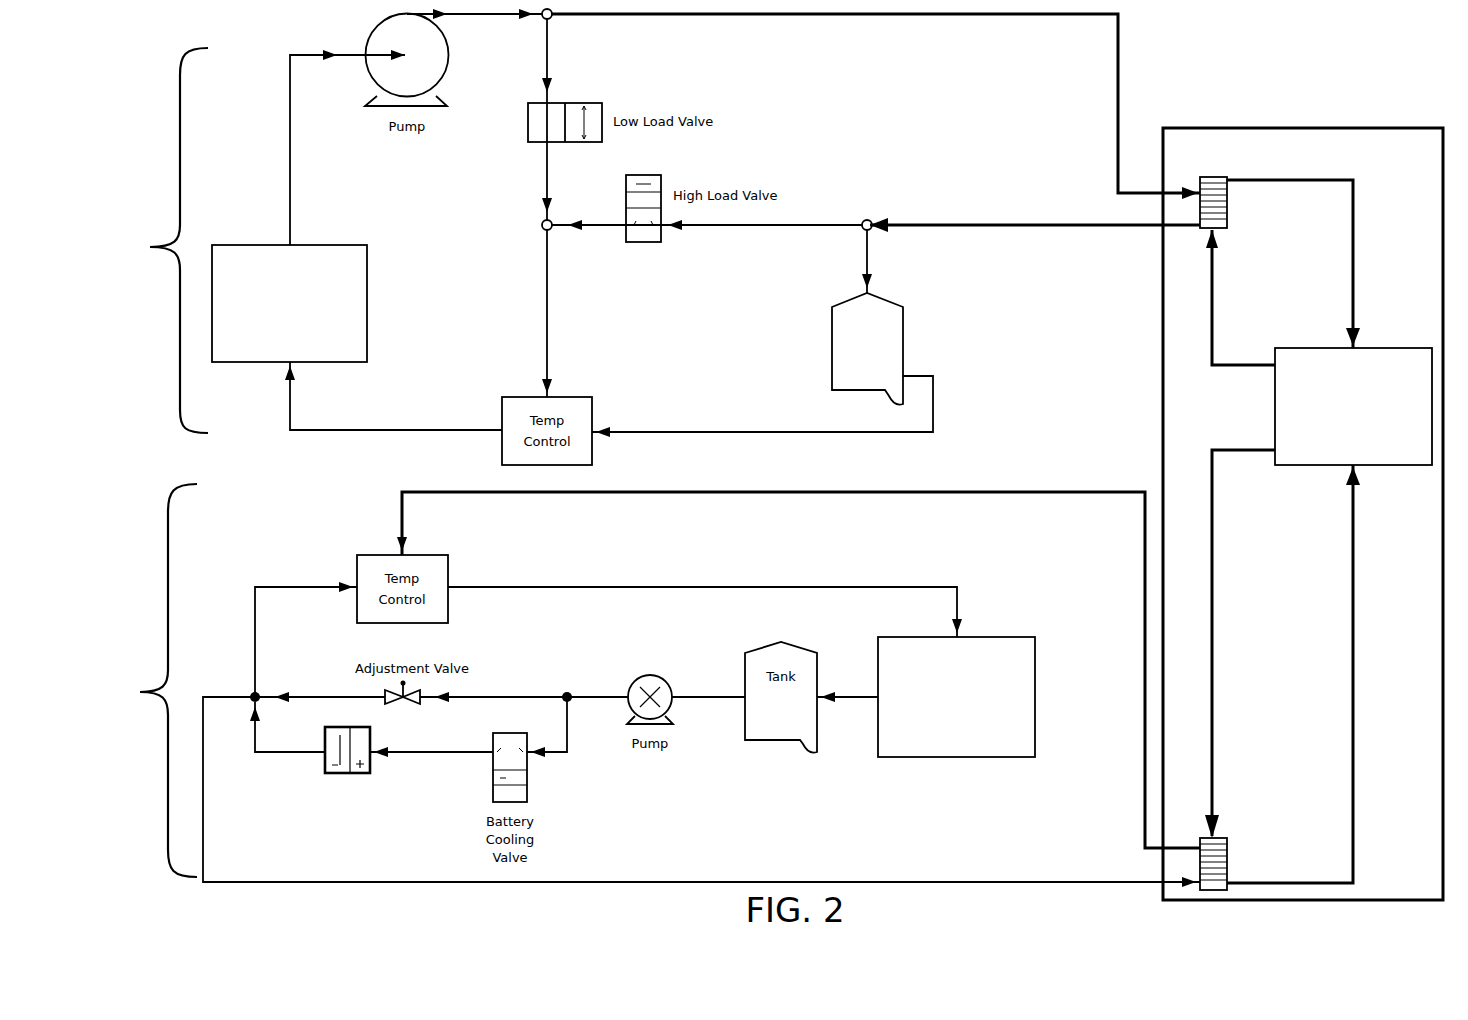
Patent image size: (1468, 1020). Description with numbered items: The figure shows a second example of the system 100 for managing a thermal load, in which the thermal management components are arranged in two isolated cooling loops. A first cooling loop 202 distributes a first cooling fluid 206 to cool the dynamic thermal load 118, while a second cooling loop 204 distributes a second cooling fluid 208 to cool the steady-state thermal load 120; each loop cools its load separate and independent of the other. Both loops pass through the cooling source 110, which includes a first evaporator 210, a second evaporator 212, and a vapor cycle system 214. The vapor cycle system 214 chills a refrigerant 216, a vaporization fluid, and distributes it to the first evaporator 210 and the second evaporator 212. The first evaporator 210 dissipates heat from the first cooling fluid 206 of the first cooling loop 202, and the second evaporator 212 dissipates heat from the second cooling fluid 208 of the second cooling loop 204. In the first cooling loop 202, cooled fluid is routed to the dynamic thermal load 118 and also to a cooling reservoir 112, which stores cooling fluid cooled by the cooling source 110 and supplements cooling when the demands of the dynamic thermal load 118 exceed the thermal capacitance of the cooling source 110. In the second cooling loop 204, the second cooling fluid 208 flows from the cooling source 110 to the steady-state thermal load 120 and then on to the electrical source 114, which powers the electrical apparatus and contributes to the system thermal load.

The system 100 is at (1262, 86).
The cooling source 110 is at (1184, 128).
The cooling reservoir 112 is at (903, 330).
The electrical source 114 is at (343, 775).
The dynamic thermal load 118 is at (342, 245).
The steady-state thermal load 120 is at (1013, 637).
The first cooling loop 202 is at (153, 240).
The second cooling loop 204 is at (143, 680).
The first cooling fluid 206 is at (333, 432).
The second cooling fluid 208 is at (913, 585).
The first evaporator 210 is at (1228, 221).
The second evaporator 212 is at (1228, 868).
The vapor cycle system 214 is at (1297, 465).
The refrigerant 216 is at (1212, 310).